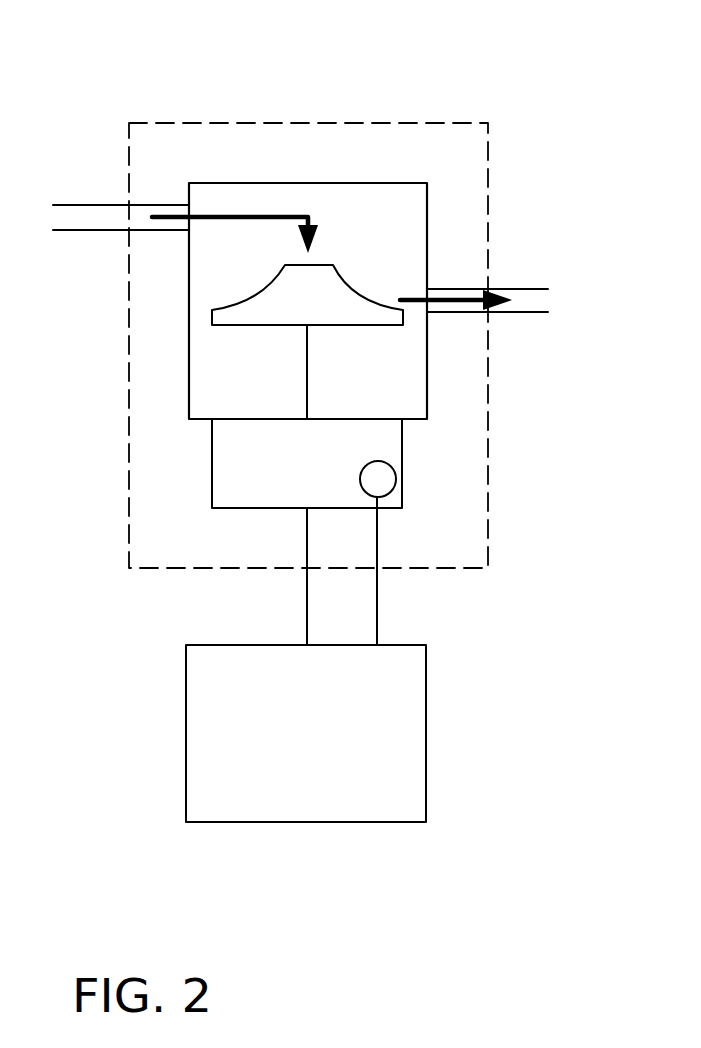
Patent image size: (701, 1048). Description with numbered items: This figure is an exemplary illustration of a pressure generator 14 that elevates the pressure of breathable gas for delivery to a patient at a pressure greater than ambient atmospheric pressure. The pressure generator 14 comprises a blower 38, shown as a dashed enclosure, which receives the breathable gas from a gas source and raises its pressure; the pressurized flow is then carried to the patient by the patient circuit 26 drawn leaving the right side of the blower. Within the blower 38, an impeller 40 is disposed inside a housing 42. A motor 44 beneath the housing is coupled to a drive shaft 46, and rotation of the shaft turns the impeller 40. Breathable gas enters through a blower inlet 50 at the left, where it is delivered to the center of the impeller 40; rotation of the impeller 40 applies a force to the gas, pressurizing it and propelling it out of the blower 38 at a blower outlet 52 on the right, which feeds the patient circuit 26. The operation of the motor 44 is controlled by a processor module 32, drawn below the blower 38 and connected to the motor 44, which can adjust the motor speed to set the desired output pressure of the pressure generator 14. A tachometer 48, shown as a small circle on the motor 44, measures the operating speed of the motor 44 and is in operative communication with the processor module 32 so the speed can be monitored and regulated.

The pressure generator 14 is at (238, 90).
The patient circuit 26 is at (530, 288).
The processor module 32 is at (423, 685).
The blower 38 is at (490, 157).
The impeller 40 is at (345, 308).
The housing 42 is at (423, 392).
The motor 44 is at (402, 452).
The drive shaft 46 is at (310, 381).
The tachometer 48 is at (382, 484).
The blower inlet 50 is at (189, 217).
The blower outlet 52 is at (430, 292).